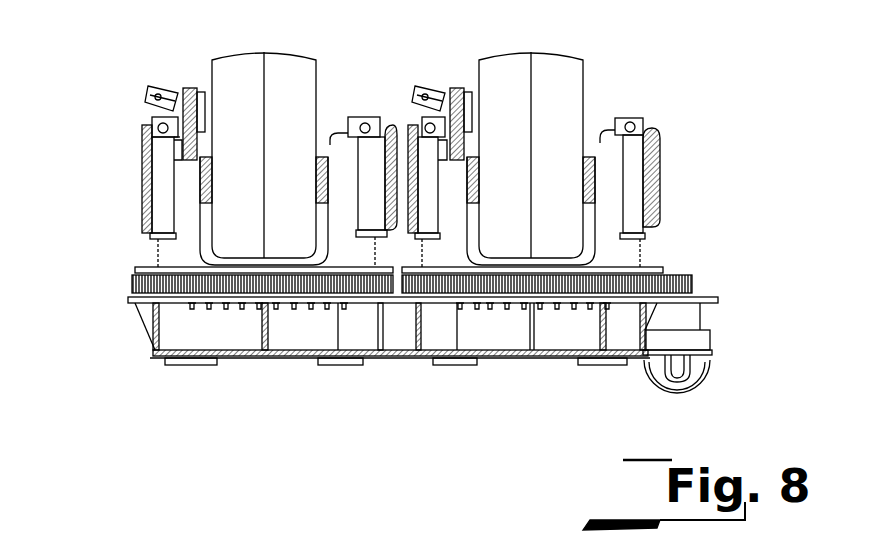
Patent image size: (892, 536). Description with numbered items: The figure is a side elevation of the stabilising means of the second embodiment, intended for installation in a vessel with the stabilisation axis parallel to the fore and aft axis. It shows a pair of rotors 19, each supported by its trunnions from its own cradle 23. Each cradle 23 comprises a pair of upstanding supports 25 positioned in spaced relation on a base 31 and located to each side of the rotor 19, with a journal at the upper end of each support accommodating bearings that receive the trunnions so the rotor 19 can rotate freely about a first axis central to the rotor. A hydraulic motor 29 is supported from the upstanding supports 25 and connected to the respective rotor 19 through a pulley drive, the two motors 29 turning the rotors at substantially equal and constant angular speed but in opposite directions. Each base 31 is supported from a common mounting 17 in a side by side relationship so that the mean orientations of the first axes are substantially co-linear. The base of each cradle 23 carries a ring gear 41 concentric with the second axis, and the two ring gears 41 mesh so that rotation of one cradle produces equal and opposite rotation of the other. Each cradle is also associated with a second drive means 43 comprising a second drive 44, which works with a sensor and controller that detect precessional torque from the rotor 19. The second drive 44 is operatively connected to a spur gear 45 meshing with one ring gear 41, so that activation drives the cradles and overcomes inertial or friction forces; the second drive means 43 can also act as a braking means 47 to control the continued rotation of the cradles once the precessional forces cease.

The common mounting 17 is at (398, 337).
The rotor 19 is at (298, 58).
The cradle 23 is at (146, 246).
The upstanding support 25 is at (177, 184).
The hydraulic motor 29 is at (165, 88).
The base 31 is at (175, 267).
The ring gear 41 is at (133, 283).
The second drive means 43 is at (722, 340).
The second drive 44 is at (697, 358).
The spur gear 45 is at (692, 283).
The braking means 47 is at (722, 320).